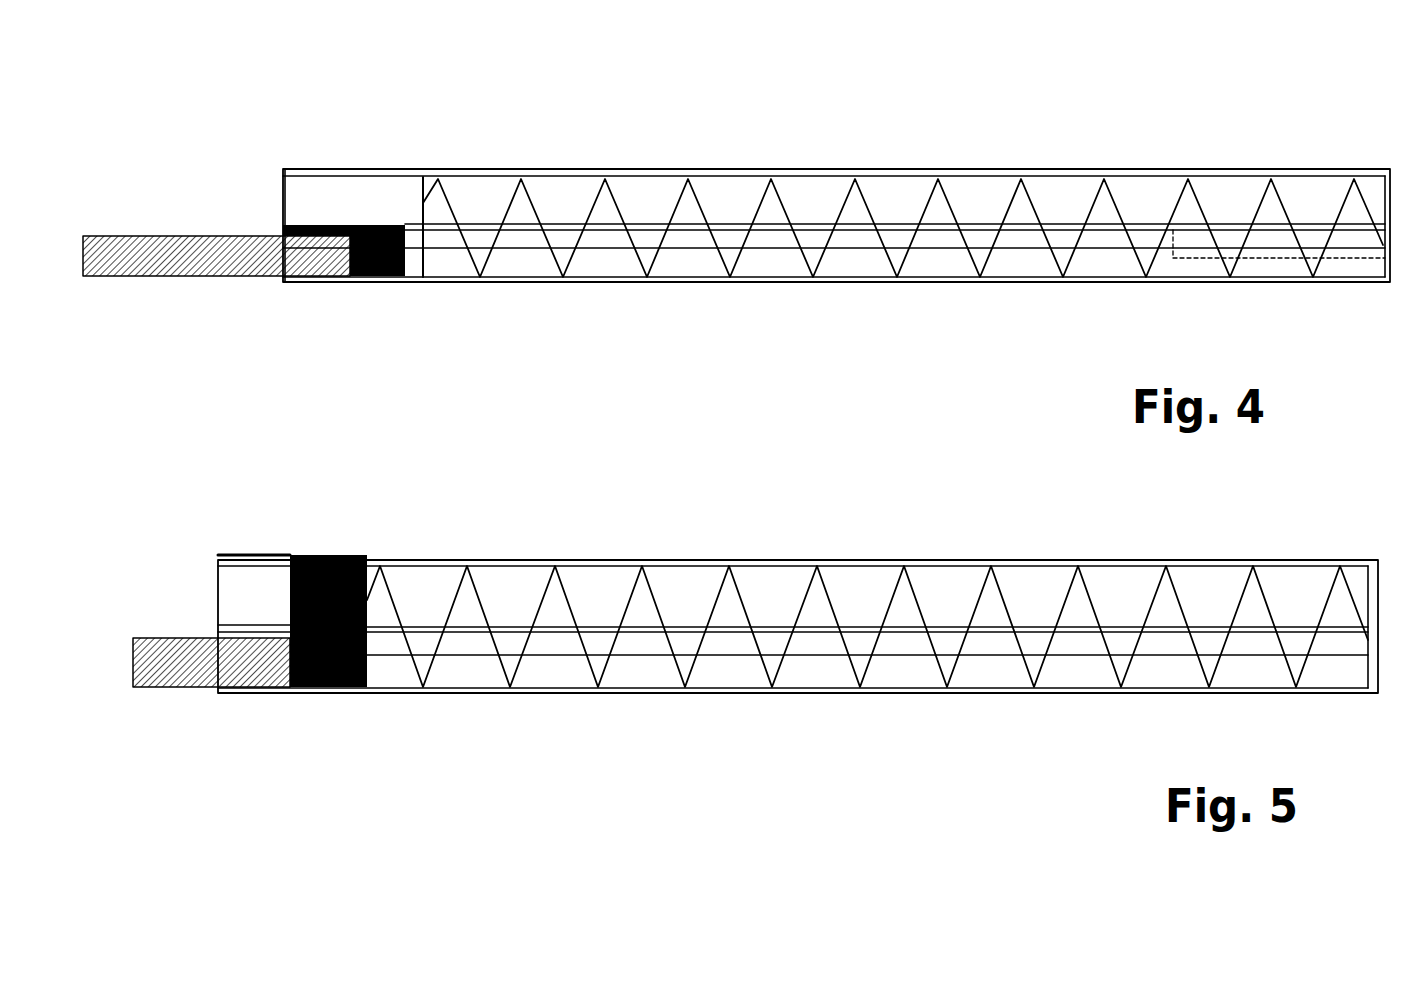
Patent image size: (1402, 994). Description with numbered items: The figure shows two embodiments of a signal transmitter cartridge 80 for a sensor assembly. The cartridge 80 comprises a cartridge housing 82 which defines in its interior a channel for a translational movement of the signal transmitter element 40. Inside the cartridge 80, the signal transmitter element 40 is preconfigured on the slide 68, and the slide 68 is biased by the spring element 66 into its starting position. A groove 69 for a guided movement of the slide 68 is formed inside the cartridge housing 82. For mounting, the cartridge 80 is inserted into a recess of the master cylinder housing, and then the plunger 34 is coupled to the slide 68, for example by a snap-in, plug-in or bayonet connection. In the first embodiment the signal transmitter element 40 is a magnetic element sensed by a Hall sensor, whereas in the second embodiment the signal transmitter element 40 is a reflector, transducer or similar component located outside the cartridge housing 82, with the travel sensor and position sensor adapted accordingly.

In FIG. 4, the plunger 34 is at (216, 199).
In FIG. 5, the plunger 34 is at (190, 613).
In FIG. 4, the signal transmitter element 40 is at (344, 129).
In FIG. 5, the signal transmitter element 40 is at (267, 500).
In FIG. 4, the spring element 66 is at (834, 300).
In FIG. 5, the spring element 66 is at (793, 724).
In FIG. 4, the slide 68 is at (347, 329).
In FIG. 5, the slide 68 is at (305, 689).
In FIG. 4, the groove 69 is at (903, 301).
In FIG. 5, the groove 69 is at (867, 694).
In FIG. 4, the cartridge 80 is at (781, 70).
In FIG. 5, the cartridge 80 is at (629, 466).
In FIG. 4, the cartridge housing 82 is at (1152, 169).
In FIG. 5, the cartridge housing 82 is at (997, 560).